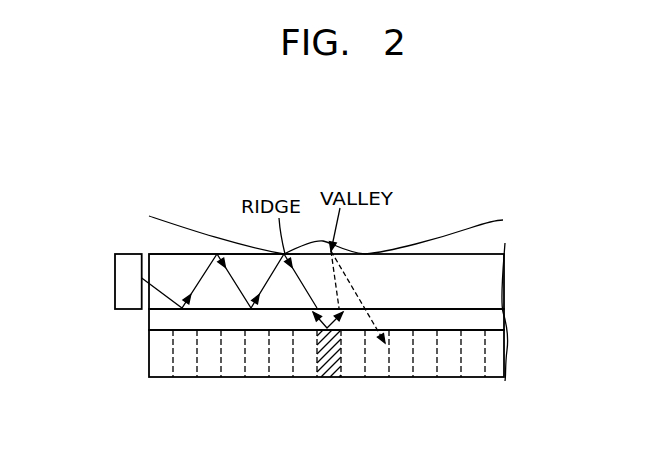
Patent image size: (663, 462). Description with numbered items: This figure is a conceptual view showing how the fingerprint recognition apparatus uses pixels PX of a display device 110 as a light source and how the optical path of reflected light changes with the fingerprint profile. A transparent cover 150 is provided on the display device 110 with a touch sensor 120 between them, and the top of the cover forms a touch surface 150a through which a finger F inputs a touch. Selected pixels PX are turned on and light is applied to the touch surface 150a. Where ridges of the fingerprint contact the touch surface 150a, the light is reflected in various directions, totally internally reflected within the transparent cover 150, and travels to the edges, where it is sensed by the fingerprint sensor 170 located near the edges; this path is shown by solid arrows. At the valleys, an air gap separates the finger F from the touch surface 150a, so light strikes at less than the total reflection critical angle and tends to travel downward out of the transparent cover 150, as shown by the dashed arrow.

The transparent cover 150 is at (492, 278).
The touch surface 150a is at (177, 254).
The fingerprint sensor 170 is at (115, 280).
The touch sensor 120 is at (500, 318).
The display device 110 is at (500, 353).
The pixel PX is at (329, 378).
The finger F is at (478, 229).